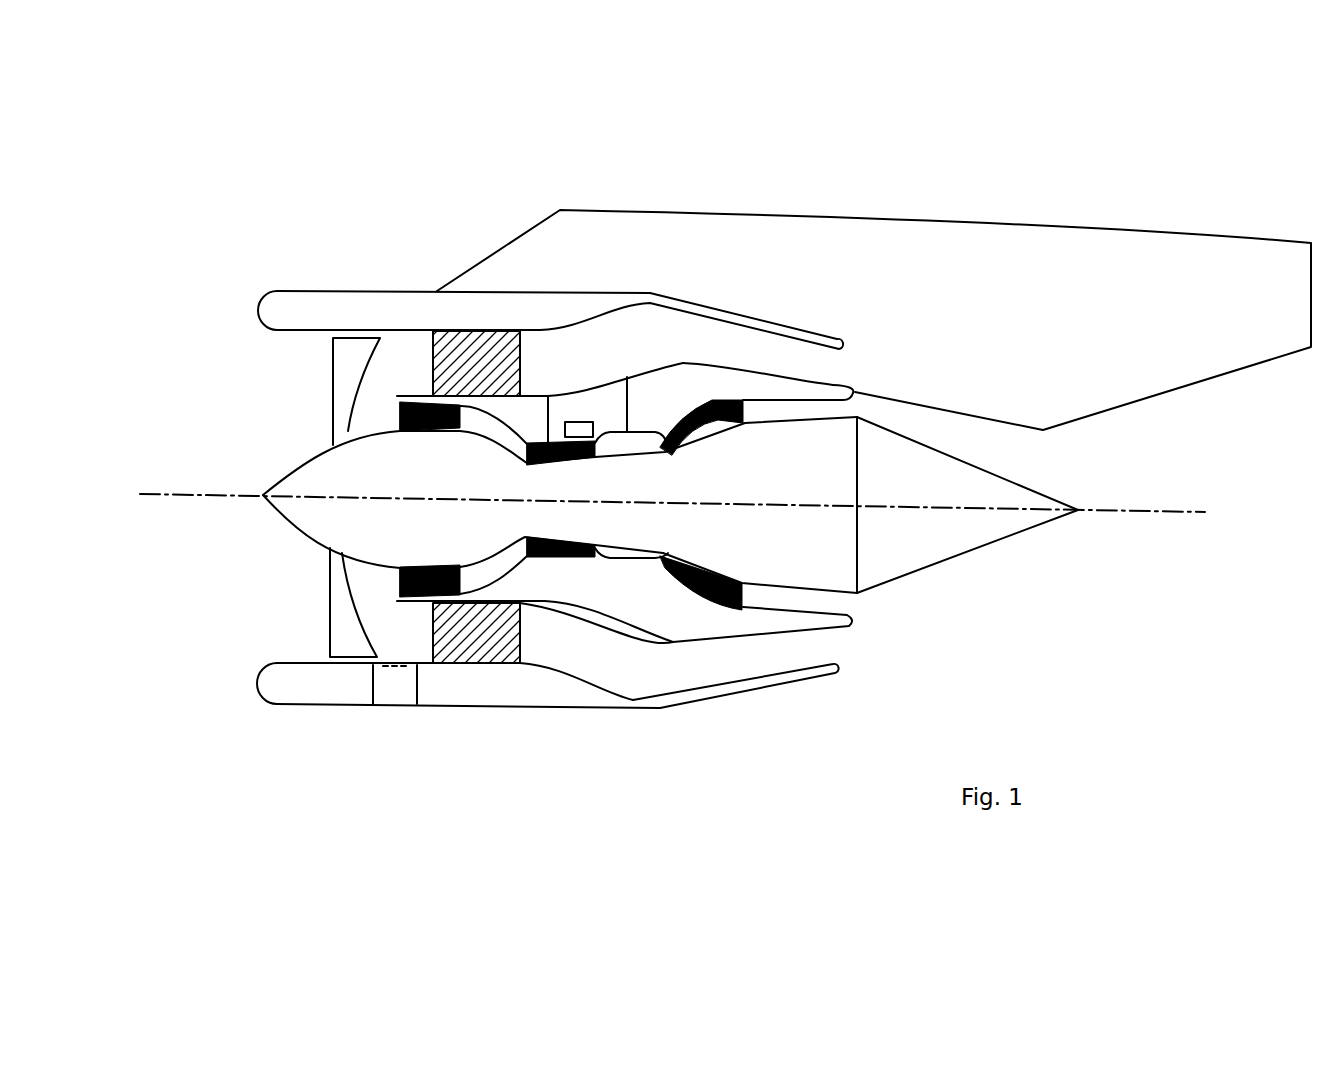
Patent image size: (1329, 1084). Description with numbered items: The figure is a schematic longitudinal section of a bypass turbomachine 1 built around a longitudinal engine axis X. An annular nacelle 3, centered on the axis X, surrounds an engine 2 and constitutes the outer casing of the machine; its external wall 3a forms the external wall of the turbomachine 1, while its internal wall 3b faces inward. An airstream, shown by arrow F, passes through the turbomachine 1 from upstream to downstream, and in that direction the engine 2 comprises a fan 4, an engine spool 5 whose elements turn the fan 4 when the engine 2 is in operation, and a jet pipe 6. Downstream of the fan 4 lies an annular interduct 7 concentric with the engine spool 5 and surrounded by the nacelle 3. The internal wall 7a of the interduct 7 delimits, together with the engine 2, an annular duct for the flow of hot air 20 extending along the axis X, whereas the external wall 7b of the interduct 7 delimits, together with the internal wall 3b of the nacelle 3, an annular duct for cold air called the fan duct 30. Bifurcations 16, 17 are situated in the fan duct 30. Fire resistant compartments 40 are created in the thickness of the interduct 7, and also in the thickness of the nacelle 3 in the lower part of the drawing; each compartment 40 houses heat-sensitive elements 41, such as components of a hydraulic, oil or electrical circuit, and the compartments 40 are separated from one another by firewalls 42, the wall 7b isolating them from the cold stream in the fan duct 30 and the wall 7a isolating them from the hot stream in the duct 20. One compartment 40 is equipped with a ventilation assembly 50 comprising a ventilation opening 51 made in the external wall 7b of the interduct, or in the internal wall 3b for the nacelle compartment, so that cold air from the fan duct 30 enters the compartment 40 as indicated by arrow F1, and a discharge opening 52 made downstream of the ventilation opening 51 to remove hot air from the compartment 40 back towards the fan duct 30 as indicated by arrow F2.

The bypass turbomachine 1 is at (243, 278).
The engine 2 is at (725, 372).
The nacelle 3 is at (550, 486).
The external wall of the nacelle 3a is at (380, 292).
The internal wall of the nacelle 3b is at (290, 332).
The fan 4 is at (330, 632).
The engine spool 5 is at (545, 513).
The jet pipe 6 is at (948, 475).
The interduct 7 is at (708, 396).
The internal wall of the interduct 7a is at (718, 400).
The external wall of the interduct 7b is at (775, 370).
The bifurcation 16 is at (503, 345).
The bifurcation 17 is at (432, 667).
The annular duct for the flow of hot air 20 is at (477, 420).
The fan duct 30 is at (384, 372).
The fire resistant compartment 40 is at (632, 378).
The heat-sensitive element 41 is at (578, 422).
The firewall 42 is at (463, 402).
The ventilation assembly 50 is at (571, 372).
The ventilation opening 51 is at (548, 396).
The discharge opening 52 is at (627, 377).
The longitudinal axis X is at (1158, 512).
The airstream F is at (284, 442).
The cold air entry flow F1 is at (567, 406).
The hot air discharge flow F2 is at (609, 405).